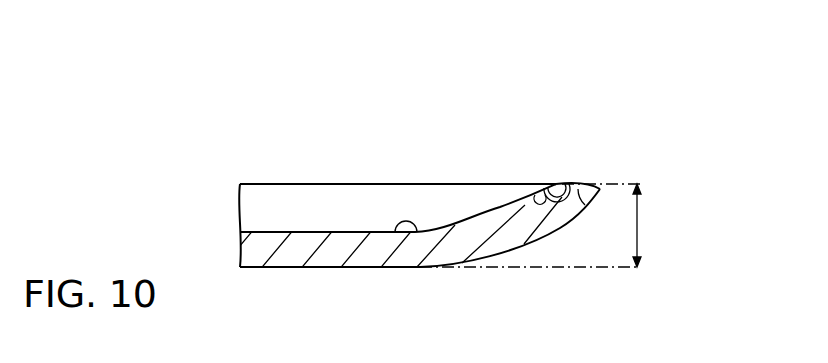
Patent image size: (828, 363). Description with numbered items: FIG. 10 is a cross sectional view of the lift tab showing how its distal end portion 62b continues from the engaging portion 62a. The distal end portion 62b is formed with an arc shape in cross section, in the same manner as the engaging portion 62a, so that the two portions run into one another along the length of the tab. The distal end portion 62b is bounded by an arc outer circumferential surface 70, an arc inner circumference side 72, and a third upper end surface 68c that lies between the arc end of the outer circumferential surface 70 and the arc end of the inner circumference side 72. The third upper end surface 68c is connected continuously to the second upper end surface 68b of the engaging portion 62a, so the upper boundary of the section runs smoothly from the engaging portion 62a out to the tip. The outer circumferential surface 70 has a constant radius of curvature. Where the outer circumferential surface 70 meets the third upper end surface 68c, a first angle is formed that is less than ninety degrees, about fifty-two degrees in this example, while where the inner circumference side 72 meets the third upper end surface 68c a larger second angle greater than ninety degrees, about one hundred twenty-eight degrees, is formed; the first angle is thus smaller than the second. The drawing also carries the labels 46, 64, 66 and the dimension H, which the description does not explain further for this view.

The insertion portion / sheath 46 is at (313, 184).
The second upper end surface 68b is at (364, 183).
The arc inner circumference side 72 is at (502, 207).
The third upper end surface 68c is at (569, 184).
The engaging portion 62a is at (288, 257).
The lower wall 64 is at (350, 268).
The boundary / joint 66 is at (413, 235).
The distal end portion 62b is at (511, 238).
The arc outer circumferential surface 70 is at (556, 228).
The height dimension H is at (647, 225).